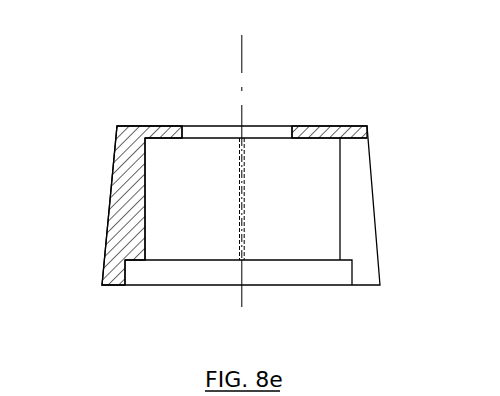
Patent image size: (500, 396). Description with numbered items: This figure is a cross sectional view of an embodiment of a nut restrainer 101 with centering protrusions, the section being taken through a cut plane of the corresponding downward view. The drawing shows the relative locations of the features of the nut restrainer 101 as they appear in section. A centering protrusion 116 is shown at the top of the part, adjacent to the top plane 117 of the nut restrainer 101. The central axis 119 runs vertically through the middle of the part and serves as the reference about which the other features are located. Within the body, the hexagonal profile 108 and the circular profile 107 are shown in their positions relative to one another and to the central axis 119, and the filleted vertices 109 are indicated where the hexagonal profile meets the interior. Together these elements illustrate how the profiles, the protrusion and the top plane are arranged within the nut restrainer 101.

The nut restrainer 101 is at (112, 169).
The circular profile 107 is at (350, 273).
The hexagonal profile 108 is at (148, 237).
The filleted vertices 109 is at (245, 197).
The centering protrusion 116 is at (312, 123).
The top plane 117 is at (161, 124).
The central axis 119 is at (244, 89).